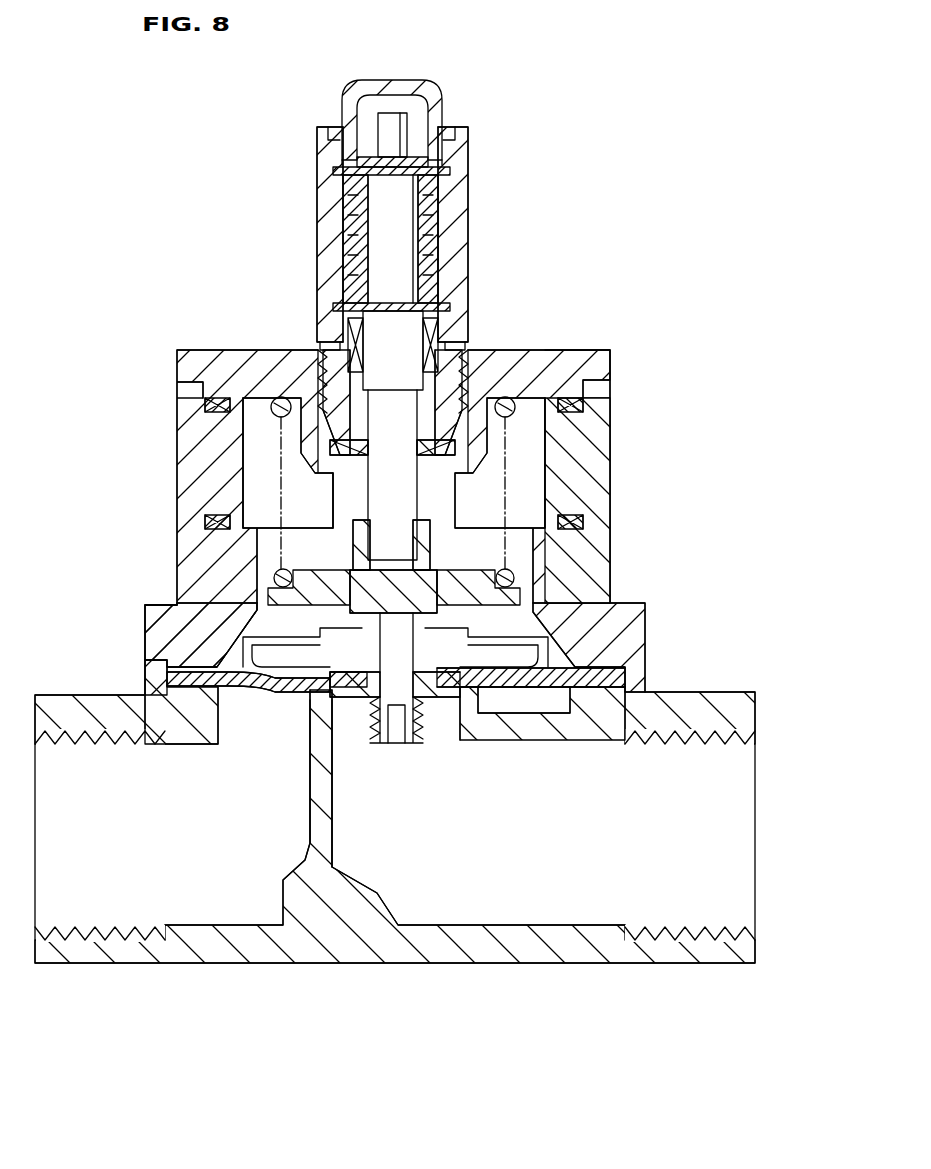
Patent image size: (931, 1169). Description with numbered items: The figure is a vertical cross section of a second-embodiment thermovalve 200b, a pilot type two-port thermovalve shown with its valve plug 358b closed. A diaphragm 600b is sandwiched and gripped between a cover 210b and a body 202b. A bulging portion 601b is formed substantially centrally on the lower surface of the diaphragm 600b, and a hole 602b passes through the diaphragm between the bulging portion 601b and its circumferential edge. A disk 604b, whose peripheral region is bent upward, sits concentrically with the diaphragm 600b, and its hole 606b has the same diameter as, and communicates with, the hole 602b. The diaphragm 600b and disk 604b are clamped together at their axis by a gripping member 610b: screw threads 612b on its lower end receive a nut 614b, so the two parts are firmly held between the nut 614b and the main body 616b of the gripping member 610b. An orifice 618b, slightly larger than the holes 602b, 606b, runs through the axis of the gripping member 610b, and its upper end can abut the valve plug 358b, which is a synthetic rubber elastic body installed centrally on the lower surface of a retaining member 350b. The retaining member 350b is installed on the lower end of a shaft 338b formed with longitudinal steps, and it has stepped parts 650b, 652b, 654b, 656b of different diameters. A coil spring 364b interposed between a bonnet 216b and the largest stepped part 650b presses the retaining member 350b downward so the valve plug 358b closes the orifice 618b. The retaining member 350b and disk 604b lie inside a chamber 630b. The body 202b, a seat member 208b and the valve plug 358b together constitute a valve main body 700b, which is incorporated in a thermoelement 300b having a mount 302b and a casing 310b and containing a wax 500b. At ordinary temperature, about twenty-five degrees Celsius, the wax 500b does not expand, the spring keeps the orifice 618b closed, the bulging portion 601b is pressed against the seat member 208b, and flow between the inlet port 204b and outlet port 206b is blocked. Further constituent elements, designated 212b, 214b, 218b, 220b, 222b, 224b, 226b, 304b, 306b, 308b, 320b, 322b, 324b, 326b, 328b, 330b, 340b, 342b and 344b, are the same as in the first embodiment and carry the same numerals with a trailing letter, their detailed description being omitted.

The thermovalve 200b is at (627, 433).
The body 202b is at (447, 940).
The inlet port 204b is at (43, 724).
The outlet port 206b is at (745, 724).
The seat member 208b is at (318, 758).
The cover 210b is at (586, 478).
The lower seal ring 212b is at (585, 518).
The upper seal ring 214b is at (586, 405).
The bonnet 216b is at (583, 363).
The cavity wall 218b is at (255, 487).
The bore wall 220b is at (380, 488).
The guide cavity 222b is at (548, 436).
The guide cavity 224b is at (242, 438).
The threaded bore 226b is at (468, 350).
The thermoelement 300b is at (485, 266).
The mount 302b is at (345, 394).
The seal member 304b is at (330, 374).
The actuating stem 306b is at (393, 350).
The body lower flange 308b is at (335, 318).
The casing 310b is at (319, 186).
The cap 320b is at (425, 91).
The plunger 322b is at (353, 112).
The upper plate 324b is at (452, 171).
The lower seal 326b is at (440, 324).
The lower plate 328b is at (452, 304).
The cylinder body 330b is at (455, 228).
The shaft 338b is at (204, 521).
The stem rod 340b is at (398, 450).
The piston rod 342b is at (370, 298).
The cap plate 344b is at (447, 159).
The retaining member 350b is at (440, 564).
The valve plug 358b is at (440, 571).
The coil spring 364b is at (232, 403).
The wax 500b is at (346, 210).
The diaphragm 600b is at (600, 690).
The bulging portion 601b is at (455, 720).
The hole 602b is at (292, 682).
The disk 604b is at (540, 702).
The hole 606b is at (272, 692).
The gripping member 610b is at (428, 699).
The screw threads 612b is at (374, 725).
The nut 614b is at (378, 735).
The main body 616b is at (500, 644).
The orifice 618b is at (400, 750).
The chamber 630b is at (560, 599).
The stepped part 650b is at (300, 584).
The stepped part 652b is at (260, 564).
The stepped part 654b is at (340, 544).
The stepped part 656b is at (240, 539).
The valve main body 700b is at (120, 654).